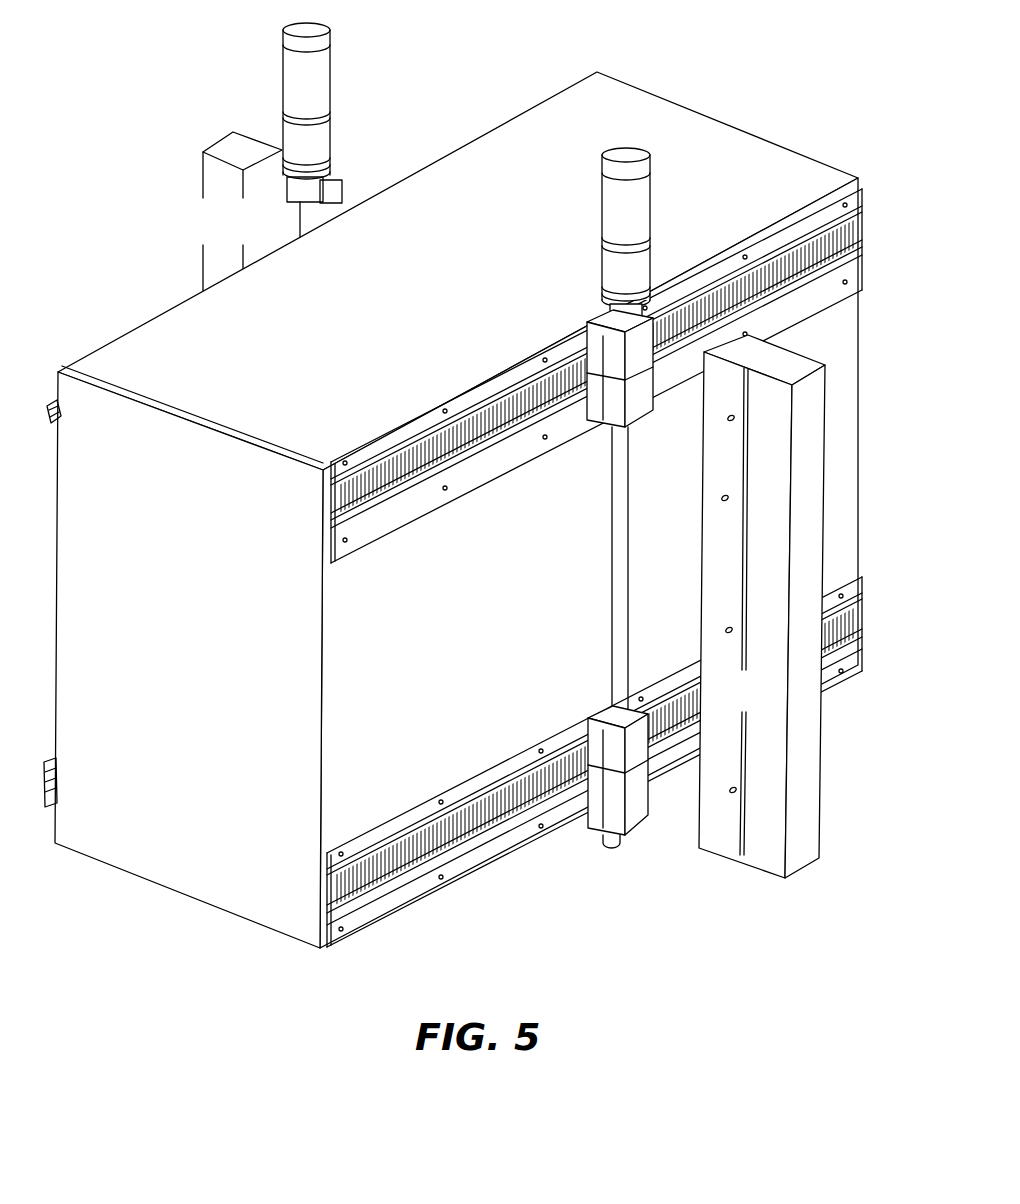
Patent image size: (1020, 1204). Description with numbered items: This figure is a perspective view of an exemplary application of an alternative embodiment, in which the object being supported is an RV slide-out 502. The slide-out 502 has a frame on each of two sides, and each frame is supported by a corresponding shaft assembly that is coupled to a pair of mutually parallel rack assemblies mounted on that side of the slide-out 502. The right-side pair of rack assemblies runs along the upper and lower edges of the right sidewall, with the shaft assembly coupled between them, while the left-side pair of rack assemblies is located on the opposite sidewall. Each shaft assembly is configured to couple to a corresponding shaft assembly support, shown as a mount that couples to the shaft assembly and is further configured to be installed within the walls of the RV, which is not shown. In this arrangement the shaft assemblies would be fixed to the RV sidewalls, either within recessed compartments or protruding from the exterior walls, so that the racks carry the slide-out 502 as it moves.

The RV slide-out 502 is at (714, 90).